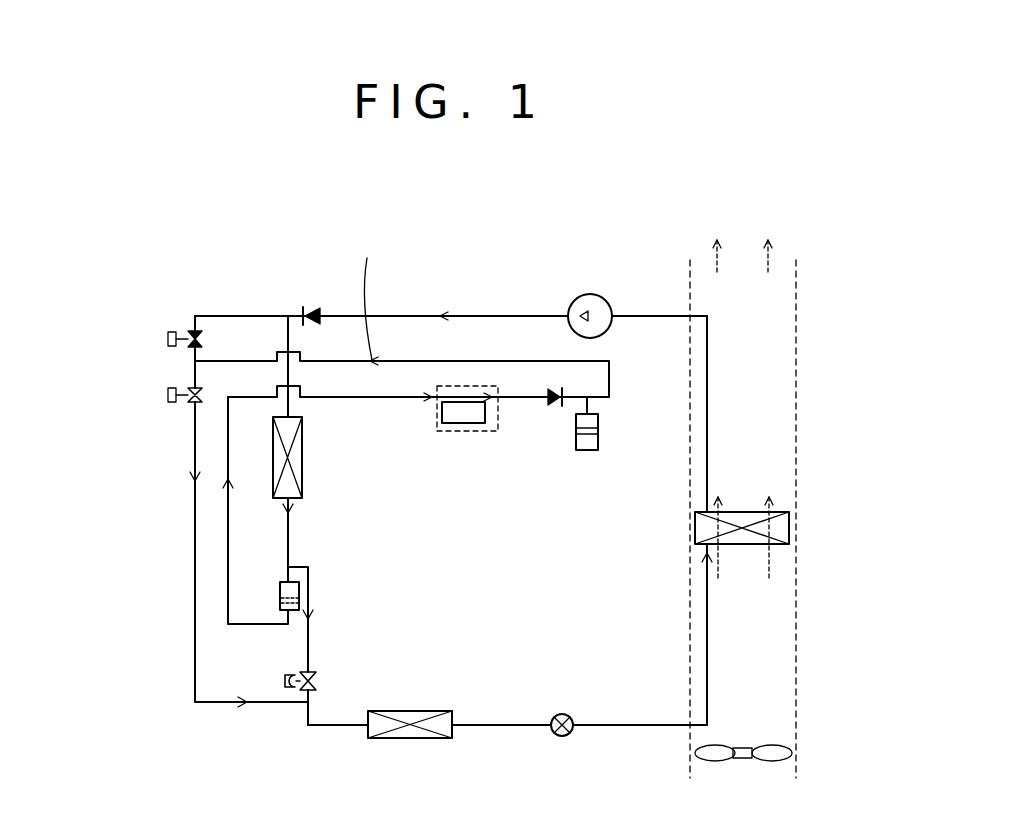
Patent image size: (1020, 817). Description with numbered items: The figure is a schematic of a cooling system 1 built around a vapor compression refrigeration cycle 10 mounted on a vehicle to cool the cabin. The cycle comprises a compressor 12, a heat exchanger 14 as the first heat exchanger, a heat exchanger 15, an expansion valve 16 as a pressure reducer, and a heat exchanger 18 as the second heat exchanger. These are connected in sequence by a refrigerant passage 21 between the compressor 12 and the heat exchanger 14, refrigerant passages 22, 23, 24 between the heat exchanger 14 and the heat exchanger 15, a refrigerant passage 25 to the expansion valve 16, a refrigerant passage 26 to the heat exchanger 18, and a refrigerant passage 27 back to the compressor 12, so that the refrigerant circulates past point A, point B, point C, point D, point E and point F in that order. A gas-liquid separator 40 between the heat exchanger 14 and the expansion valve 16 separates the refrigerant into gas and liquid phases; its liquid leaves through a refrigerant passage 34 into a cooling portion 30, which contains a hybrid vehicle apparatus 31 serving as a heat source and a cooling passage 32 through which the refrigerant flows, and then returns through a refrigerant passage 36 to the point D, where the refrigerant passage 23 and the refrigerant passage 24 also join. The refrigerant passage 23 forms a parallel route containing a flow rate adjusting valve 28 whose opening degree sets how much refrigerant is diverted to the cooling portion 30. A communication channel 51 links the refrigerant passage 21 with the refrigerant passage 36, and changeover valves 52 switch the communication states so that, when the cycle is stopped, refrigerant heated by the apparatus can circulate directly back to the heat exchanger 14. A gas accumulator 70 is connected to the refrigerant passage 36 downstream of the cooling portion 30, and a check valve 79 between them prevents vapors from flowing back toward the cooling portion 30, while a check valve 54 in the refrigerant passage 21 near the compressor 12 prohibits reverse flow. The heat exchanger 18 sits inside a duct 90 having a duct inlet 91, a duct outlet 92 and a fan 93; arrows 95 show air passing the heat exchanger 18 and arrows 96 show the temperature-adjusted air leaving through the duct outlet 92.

The cooling system 1 is at (165, 250).
The vapor compression refrigeration cycle 10 is at (478, 312).
The compressor 12 is at (599, 300).
The heat exchanger 14 is at (278, 458).
The heat exchanger 15 is at (410, 739).
The expansion valve 16 is at (562, 737).
The heat exchanger 18 is at (705, 528).
The refrigerant passage 21 is at (408, 316).
The refrigerant passage 22 is at (285, 525).
The refrigerant passage 23 is at (312, 652).
The refrigerant passage 24 is at (343, 727).
The refrigerant passage 25 is at (473, 727).
The refrigerant passage 26 is at (613, 727).
The refrigerant passage 27 is at (672, 316).
The flow rate adjusting valve 28 is at (285, 681).
The cooling portion 30 is at (498, 420).
The hybrid vehicle (HV) apparatus 31 is at (475, 420).
The cooling passage 32 is at (458, 400).
The refrigerant passage 34 is at (378, 399).
The refrigerant passage 36 is at (172, 495).
The gas-liquid separator 40 is at (280, 592).
The communication channel 51 is at (233, 316).
The changeover valves 52 is at (168, 339).
The check valve 54 is at (313, 313).
The gas accumulator 70 is at (598, 440).
The check valve 79 is at (555, 403).
The duct 90 is at (797, 385).
The duct inlet 91 is at (785, 778).
The duct outlet 92 is at (783, 262).
The fan 93 is at (780, 753).
The arrows 95 is at (770, 556).
The arrows 96 is at (775, 266).
The point A is at (640, 318).
The point B is at (288, 316).
The point C is at (228, 626).
The point D is at (307, 712).
The point E is at (515, 727).
The point F is at (657, 727).